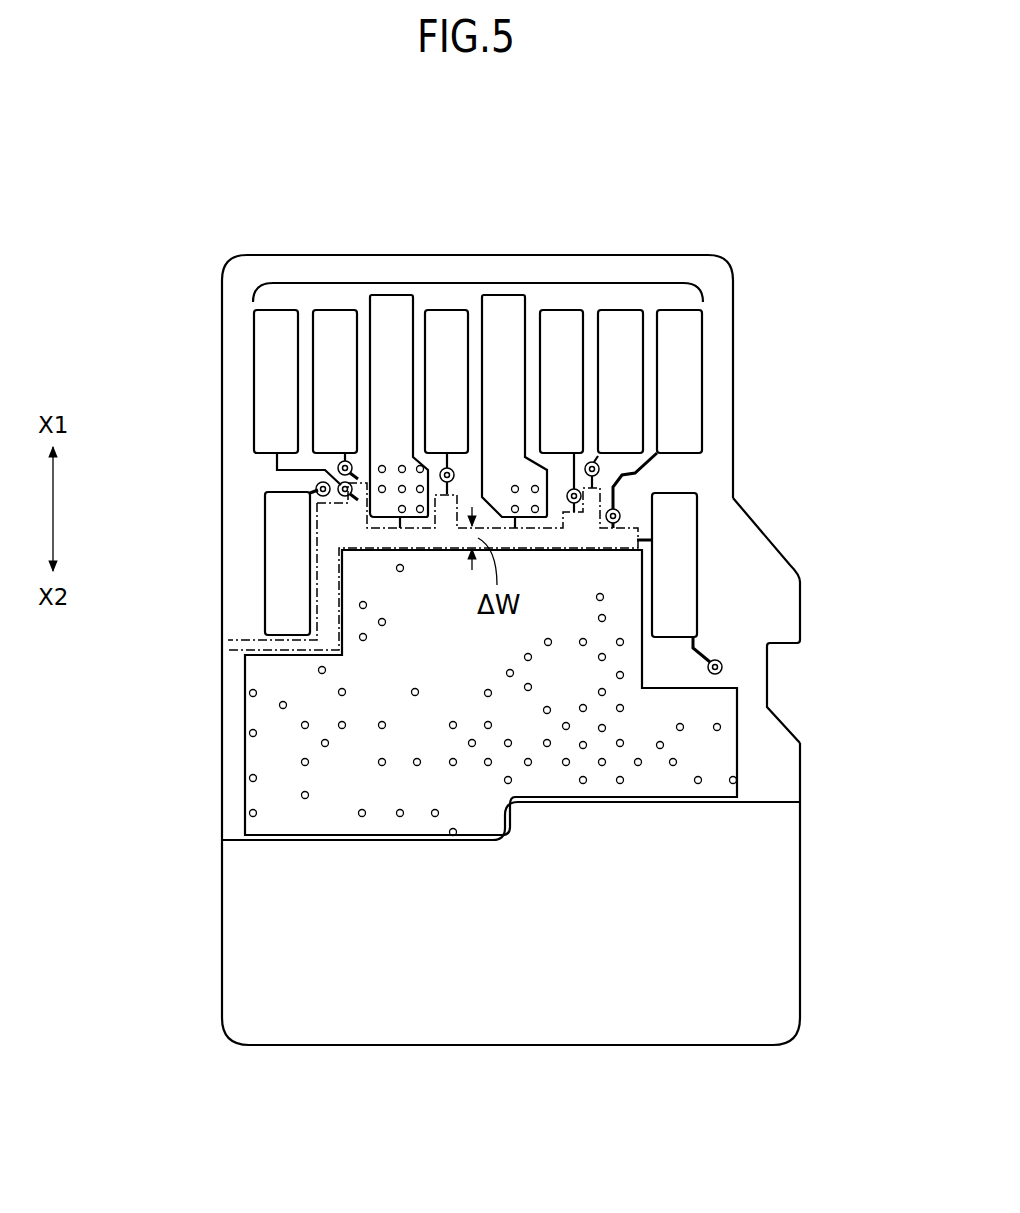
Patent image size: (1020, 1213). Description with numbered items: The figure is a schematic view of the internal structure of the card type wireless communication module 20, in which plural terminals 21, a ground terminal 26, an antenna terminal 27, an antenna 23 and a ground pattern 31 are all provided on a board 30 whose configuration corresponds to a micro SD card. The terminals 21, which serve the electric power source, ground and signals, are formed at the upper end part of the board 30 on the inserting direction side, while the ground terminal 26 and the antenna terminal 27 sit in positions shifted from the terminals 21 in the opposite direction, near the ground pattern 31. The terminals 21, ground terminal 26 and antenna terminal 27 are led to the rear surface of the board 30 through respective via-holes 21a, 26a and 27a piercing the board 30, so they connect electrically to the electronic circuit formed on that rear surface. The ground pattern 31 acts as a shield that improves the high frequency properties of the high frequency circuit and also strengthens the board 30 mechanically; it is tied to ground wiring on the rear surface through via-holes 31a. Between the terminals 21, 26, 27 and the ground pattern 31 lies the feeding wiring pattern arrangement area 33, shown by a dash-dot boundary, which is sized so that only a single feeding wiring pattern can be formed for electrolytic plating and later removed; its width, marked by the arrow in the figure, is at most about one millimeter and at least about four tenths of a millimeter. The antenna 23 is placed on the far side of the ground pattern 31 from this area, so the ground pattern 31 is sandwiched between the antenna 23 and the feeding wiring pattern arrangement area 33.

The card type wireless communication module 20 is at (700, 181).
The terminals 21 is at (545, 283).
The via-holes 21a is at (417, 486).
The antenna 23 is at (765, 960).
The ground terminal 26 is at (265, 525).
The via-hole 26a is at (316, 489).
The antenna terminal 27 is at (687, 515).
The via-hole 27a is at (722, 664).
The board 30 is at (756, 581).
The ground pattern 31 is at (337, 713).
The via-holes 31a is at (624, 646).
The feeding wiring pattern arrangement area 33 is at (332, 533).